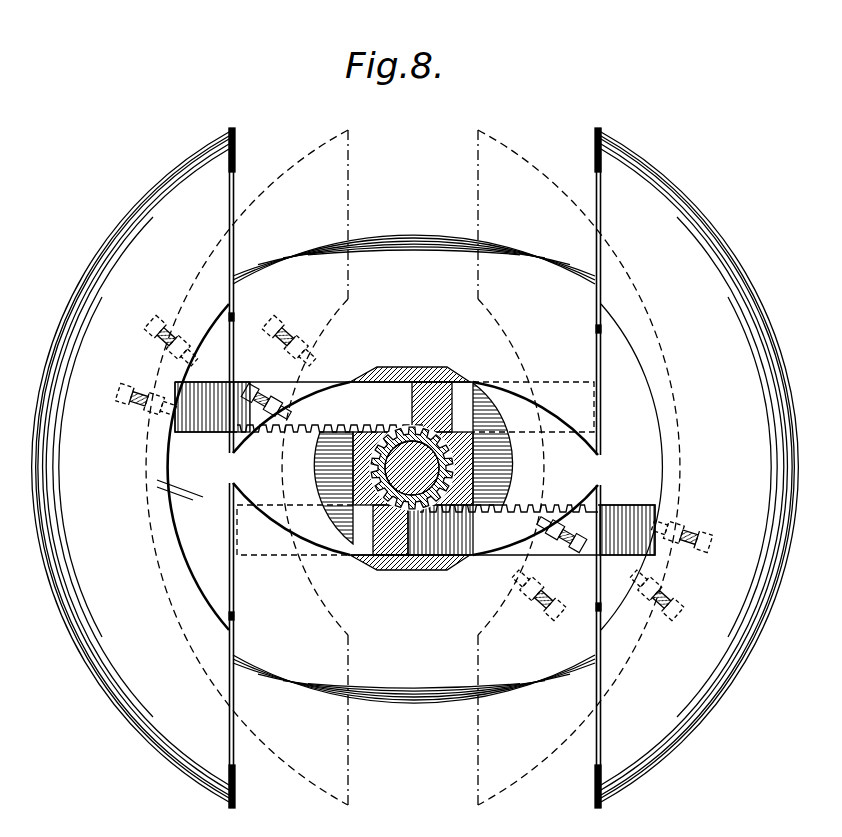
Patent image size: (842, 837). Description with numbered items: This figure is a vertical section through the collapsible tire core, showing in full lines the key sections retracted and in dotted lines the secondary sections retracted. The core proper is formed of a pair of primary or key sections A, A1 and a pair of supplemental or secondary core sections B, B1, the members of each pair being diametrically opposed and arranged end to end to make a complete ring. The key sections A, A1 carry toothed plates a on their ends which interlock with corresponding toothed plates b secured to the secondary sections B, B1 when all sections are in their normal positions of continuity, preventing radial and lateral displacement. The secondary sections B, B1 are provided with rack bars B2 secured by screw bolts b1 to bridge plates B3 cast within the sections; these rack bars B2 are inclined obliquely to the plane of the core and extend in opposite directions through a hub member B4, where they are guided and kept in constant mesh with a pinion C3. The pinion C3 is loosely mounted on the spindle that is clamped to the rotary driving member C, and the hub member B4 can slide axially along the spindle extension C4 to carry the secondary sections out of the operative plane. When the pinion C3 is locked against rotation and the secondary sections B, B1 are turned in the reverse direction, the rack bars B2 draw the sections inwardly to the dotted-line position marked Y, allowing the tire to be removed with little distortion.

The key section A is at (277, 260).
The key section A1 is at (414, 670).
The secondary core section B is at (130, 467).
The secondary core section B1 is at (699, 467).
The rack bar B2 is at (480, 555).
The bridge plate B3 is at (150, 363).
The hub member B4 is at (425, 380).
The rotary support or driving member C is at (508, 473).
The pinion C3 is at (384, 468).
The spindle extension C4 is at (372, 498).
The toothed plate a is at (235, 338).
The toothed plate b is at (235, 147).
The screw bolt b1 is at (222, 362).
The dotted line position Y is at (419, 459).